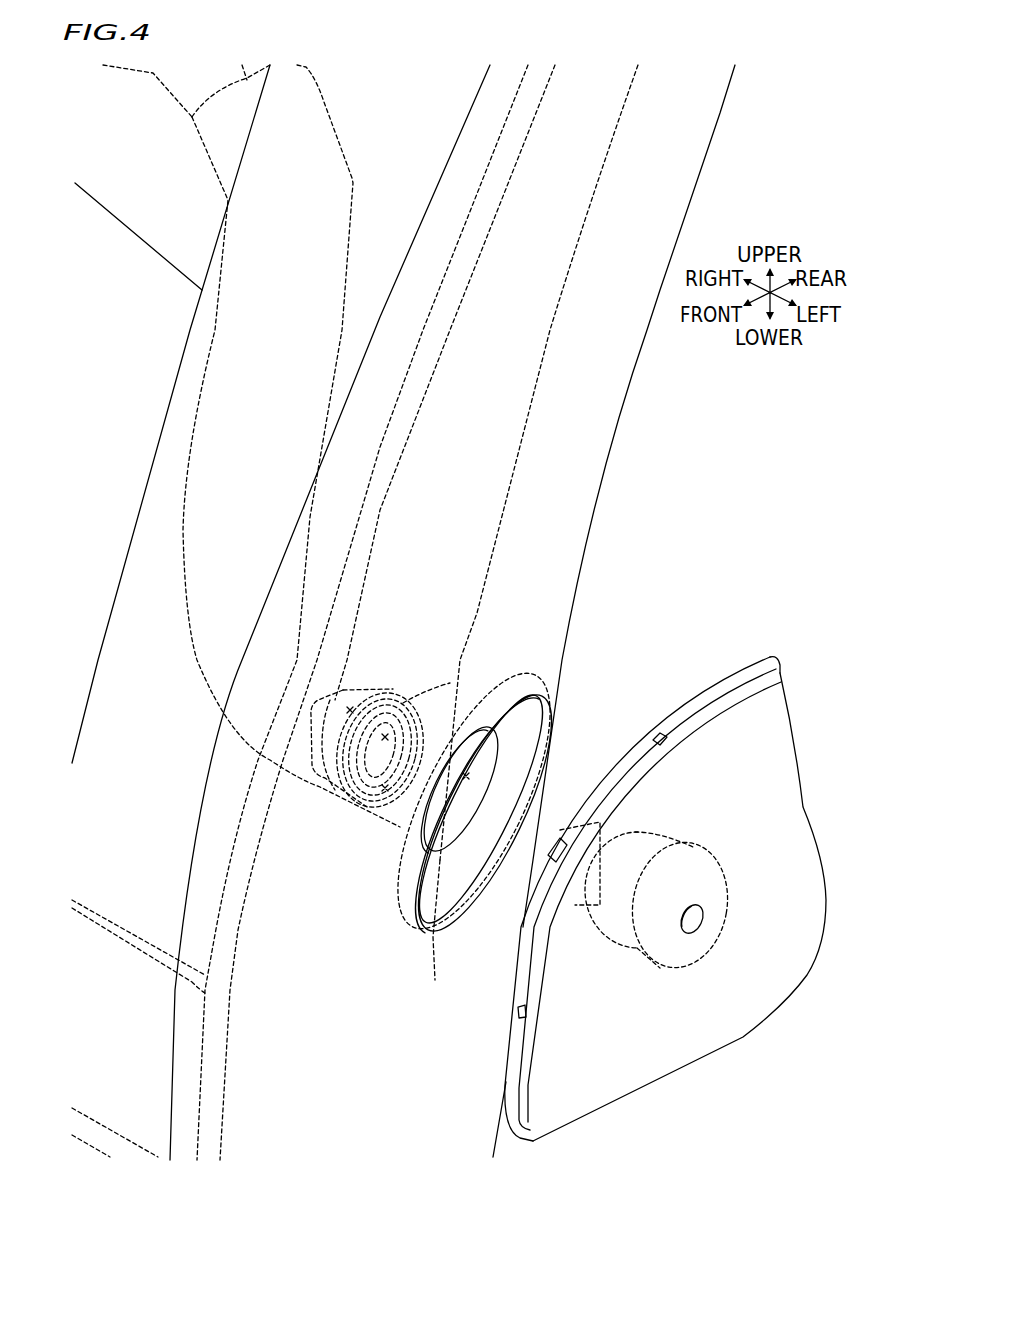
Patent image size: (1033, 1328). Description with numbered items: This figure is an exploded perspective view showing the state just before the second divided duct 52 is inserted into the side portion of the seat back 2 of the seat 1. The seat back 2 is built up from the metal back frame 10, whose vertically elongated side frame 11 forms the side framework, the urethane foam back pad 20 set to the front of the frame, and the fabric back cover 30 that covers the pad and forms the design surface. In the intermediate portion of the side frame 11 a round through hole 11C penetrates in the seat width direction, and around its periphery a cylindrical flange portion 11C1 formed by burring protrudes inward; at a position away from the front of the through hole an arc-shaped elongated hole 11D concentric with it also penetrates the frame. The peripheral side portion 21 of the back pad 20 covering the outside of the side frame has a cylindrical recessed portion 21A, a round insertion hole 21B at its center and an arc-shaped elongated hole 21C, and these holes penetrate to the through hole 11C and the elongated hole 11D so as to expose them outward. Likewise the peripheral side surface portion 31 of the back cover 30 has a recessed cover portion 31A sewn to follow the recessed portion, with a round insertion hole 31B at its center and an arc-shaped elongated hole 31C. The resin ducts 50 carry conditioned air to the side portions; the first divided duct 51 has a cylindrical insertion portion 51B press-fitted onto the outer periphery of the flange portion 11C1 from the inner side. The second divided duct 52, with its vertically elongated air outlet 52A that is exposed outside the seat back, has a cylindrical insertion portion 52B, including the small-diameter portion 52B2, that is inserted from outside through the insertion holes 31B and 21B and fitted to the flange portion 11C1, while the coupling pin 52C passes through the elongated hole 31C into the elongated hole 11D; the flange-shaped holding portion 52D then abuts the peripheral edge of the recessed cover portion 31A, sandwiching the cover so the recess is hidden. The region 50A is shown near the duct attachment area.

The seat 1 is at (725, 413).
The seat back 2 is at (772, 399).
The back frame 10 is at (493, 383).
The side frame 11 is at (582, 133).
The through hole 11C is at (408, 698).
The flange portion 11C1 is at (412, 730).
The elongated hole 11D is at (350, 692).
The back pad 20 is at (568, 611).
The peripheral side portion 21 is at (540, 547).
The recessed portion 21A is at (517, 734).
The insertion hole 21B is at (481, 771).
The elongated hole 21C is at (390, 920).
The back cover 30 is at (688, 212).
The peripheral side surface portion 31 is at (500, 730).
The recessed cover portion 31A is at (520, 738).
The insertion hole 31B is at (497, 735).
The elongated hole 31C is at (390, 920).
The duct 50 is at (665, 888).
The attachment portion 50A is at (589, 742).
The first divided duct 51 is at (247, 382).
The insertion portion 51B is at (432, 703).
The second divided duct 52 is at (665, 888).
The air outlet 52A is at (686, 712).
The insertion portion 52B is at (648, 850).
The small-diameter portion 52B2 is at (685, 884).
The coupling pin 52C is at (556, 840).
The holding portion 52D is at (600, 990).